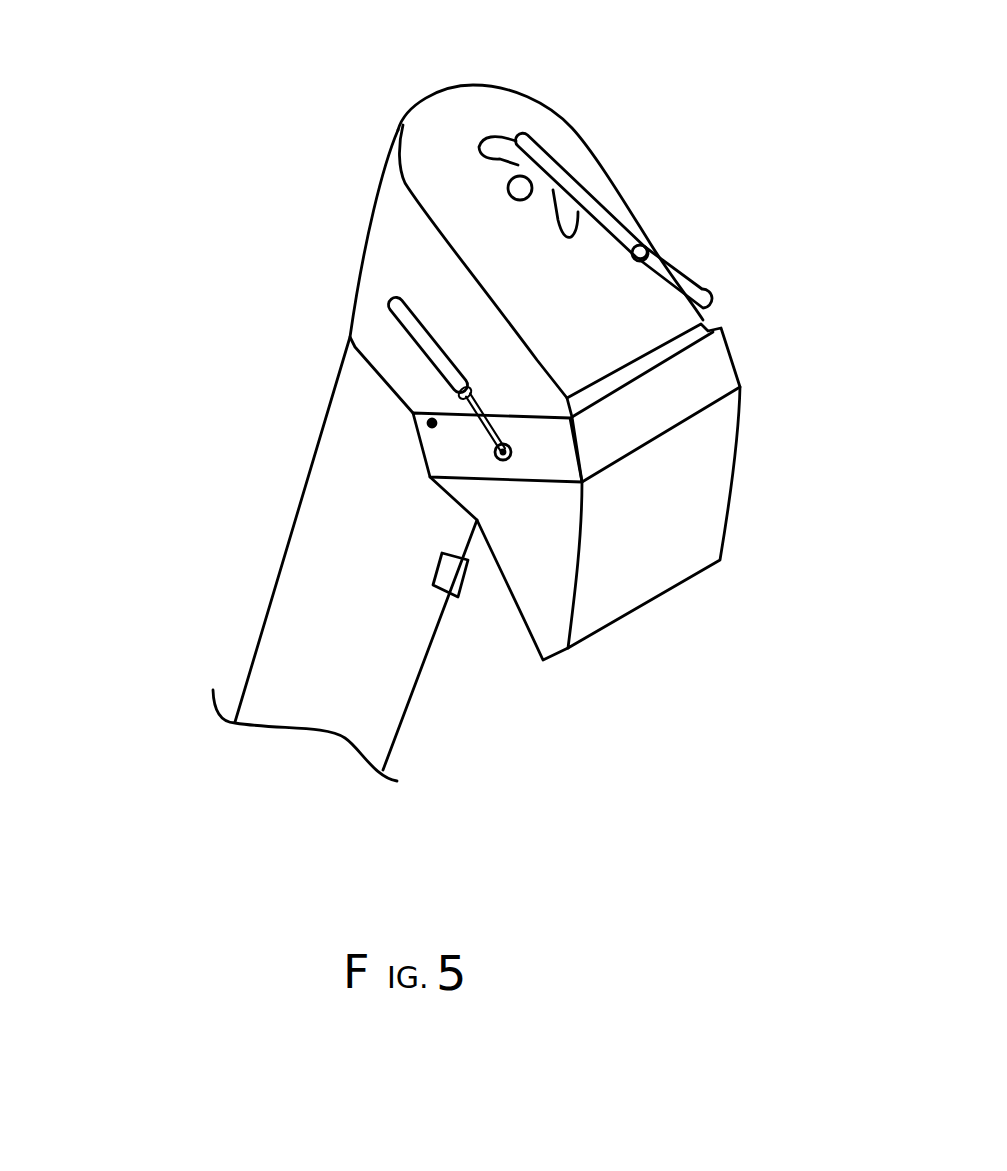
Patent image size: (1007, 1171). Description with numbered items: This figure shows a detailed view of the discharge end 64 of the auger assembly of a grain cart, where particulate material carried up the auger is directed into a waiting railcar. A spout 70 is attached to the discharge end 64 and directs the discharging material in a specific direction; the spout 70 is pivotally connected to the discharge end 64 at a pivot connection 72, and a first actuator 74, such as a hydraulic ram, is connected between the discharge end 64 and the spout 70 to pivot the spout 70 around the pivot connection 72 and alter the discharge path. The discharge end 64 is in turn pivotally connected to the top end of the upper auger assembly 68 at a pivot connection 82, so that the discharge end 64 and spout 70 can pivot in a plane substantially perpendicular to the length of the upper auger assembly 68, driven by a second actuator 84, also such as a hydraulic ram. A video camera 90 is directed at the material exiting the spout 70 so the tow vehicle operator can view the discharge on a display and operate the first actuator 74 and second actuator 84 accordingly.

The discharge end 64 is at (667, 140).
The upper auger assembly 68 is at (315, 600).
The spout 70 is at (702, 514).
The pivot connection 72 is at (413, 413).
The first actuator 74 is at (419, 338).
The pivot connection 82 is at (522, 186).
The second actuator 84 is at (617, 234).
The video camera 90 is at (458, 583).